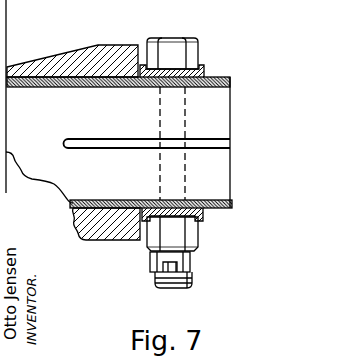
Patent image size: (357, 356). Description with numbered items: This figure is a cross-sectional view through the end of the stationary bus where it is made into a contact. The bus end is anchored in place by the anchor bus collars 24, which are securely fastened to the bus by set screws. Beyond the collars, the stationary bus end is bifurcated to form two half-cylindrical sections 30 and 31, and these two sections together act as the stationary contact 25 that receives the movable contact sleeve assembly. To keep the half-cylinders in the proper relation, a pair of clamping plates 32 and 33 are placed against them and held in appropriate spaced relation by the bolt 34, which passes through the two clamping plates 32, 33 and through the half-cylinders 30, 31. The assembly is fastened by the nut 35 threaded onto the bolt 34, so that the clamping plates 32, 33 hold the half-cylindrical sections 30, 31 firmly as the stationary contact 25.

The anchor bus collar 24 is at (40, 66).
The stationary contact 25 is at (229, 52).
The half-cylindrical section 30 is at (222, 97).
The half-cylindrical section 31 is at (222, 188).
The clamping plate 32 is at (204, 70).
The clamping plate 33 is at (203, 216).
The bolt 34 is at (180, 284).
The nut 35 is at (198, 249).